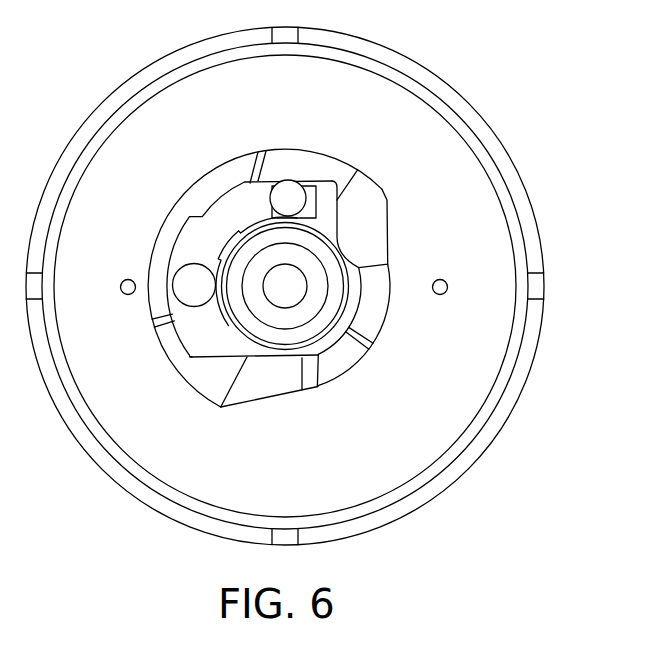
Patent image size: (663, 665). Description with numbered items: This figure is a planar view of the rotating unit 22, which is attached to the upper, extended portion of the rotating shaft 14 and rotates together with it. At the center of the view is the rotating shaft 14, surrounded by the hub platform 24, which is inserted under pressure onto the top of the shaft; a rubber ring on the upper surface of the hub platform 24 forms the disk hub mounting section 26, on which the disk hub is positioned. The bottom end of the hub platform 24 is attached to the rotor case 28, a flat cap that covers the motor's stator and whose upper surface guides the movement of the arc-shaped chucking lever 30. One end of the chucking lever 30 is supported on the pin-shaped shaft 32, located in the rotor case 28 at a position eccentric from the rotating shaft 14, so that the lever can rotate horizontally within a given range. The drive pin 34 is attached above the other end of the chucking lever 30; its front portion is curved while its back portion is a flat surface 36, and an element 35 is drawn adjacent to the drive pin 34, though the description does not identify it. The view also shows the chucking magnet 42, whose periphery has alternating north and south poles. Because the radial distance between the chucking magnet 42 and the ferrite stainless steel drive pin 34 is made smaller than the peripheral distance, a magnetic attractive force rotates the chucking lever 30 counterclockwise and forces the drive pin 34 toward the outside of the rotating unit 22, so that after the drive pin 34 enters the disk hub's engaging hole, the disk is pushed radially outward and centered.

The rotating unit 22 is at (456, 60).
The rotor case 28 is at (468, 176).
The chucking lever 30 is at (212, 237).
The chucking magnet 42 is at (364, 192).
The flat surface 36 is at (250, 176).
The sensor mount 35 is at (301, 188).
The drive pin 34 is at (286, 193).
The shaft 32 is at (176, 295).
The disk hub mounting section 26 is at (304, 337).
The hub platform 24 is at (312, 320).
The rotating shaft 14 is at (297, 295).